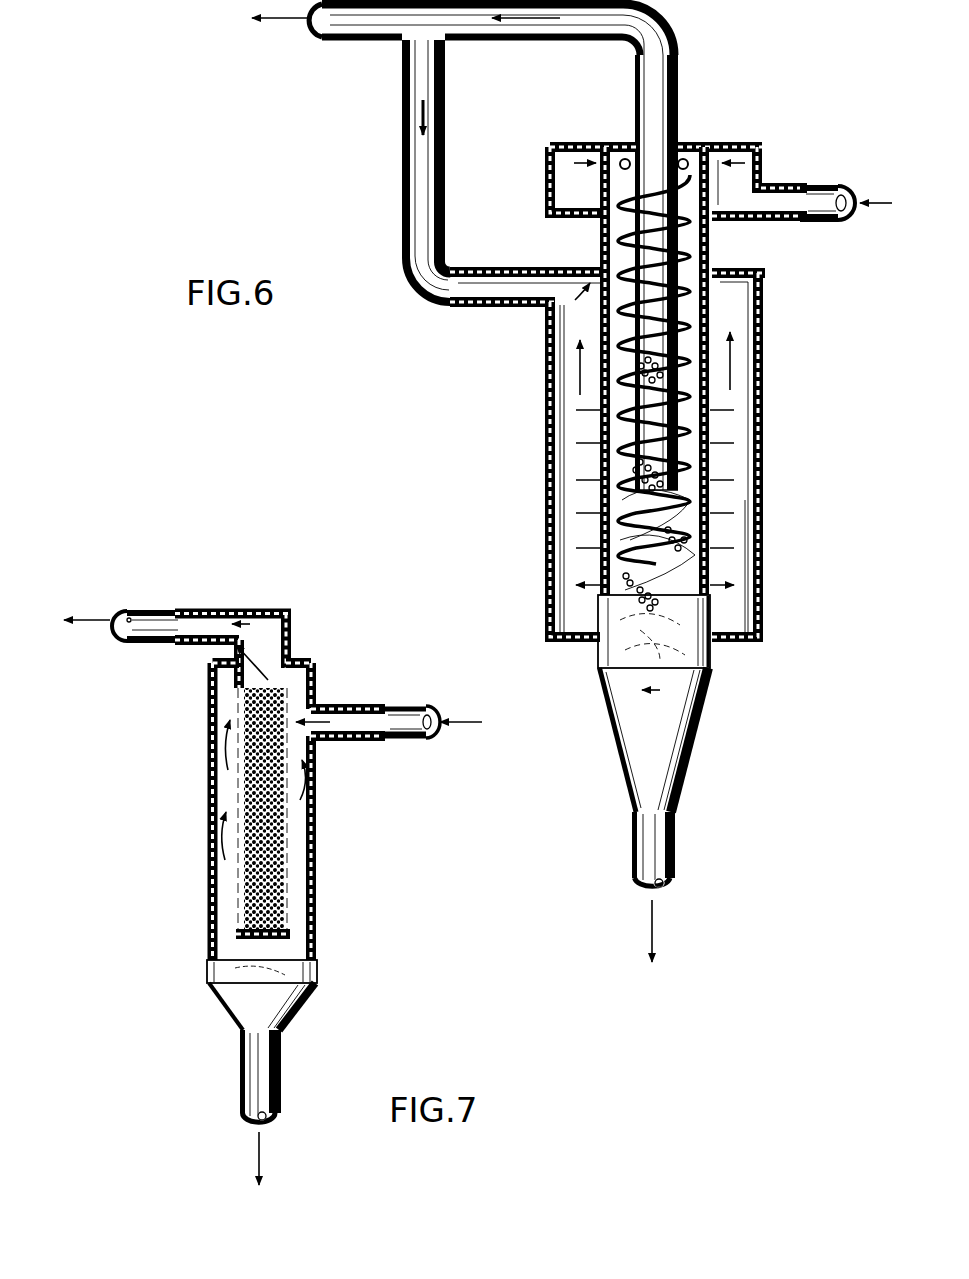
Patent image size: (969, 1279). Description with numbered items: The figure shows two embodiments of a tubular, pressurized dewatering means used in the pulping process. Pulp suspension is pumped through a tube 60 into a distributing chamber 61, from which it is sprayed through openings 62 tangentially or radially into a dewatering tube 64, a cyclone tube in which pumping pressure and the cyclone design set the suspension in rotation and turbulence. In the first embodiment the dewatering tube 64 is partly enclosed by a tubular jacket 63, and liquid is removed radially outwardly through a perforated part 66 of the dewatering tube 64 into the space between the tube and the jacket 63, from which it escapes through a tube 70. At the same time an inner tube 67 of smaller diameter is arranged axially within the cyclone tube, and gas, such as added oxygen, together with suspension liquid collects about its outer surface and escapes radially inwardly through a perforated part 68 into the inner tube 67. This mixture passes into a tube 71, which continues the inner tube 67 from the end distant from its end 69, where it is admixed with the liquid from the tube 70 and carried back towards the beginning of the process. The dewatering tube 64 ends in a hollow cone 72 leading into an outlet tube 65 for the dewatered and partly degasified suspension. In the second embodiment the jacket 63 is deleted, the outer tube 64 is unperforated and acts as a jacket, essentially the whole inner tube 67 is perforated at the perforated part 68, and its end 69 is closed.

In FIG. 6, the tube 60 is at (818, 224).
In FIG. 7, the tube 60 is at (398, 712).
In FIG. 6, the distributing chamber 61 is at (762, 170).
In FIG. 6, the openings 62 is at (603, 148).
In FIG. 6, the tubular jacket 63 is at (765, 380).
In FIG. 6, the dewatering tube 64 is at (712, 240).
In FIG. 7, the dewatering tube 64 is at (317, 855).
In FIG. 6, the outlet tube 65 is at (672, 835).
In FIG. 7, the outlet tube 65 is at (282, 1085).
In FIG. 6, the perforated part 66 is at (712, 510).
In FIG. 6, the inner tube 67 is at (640, 322).
In FIG. 7, the inner tube 67 is at (268, 668).
In FIG. 6, the perforated part 68 is at (655, 396).
In FIG. 7, the perforated part 68 is at (284, 782).
In FIG. 6, the end 69 is at (640, 505).
In FIG. 7, the end 69 is at (317, 958).
In FIG. 6, the tube 70 is at (402, 258).
In FIG. 6, the tube 71 is at (384, 42).
In FIG. 7, the tube 71 is at (150, 640).
In FIG. 6, the hollow cone 72 is at (700, 700).
In FIG. 7, the hollow cone 72 is at (292, 1010).